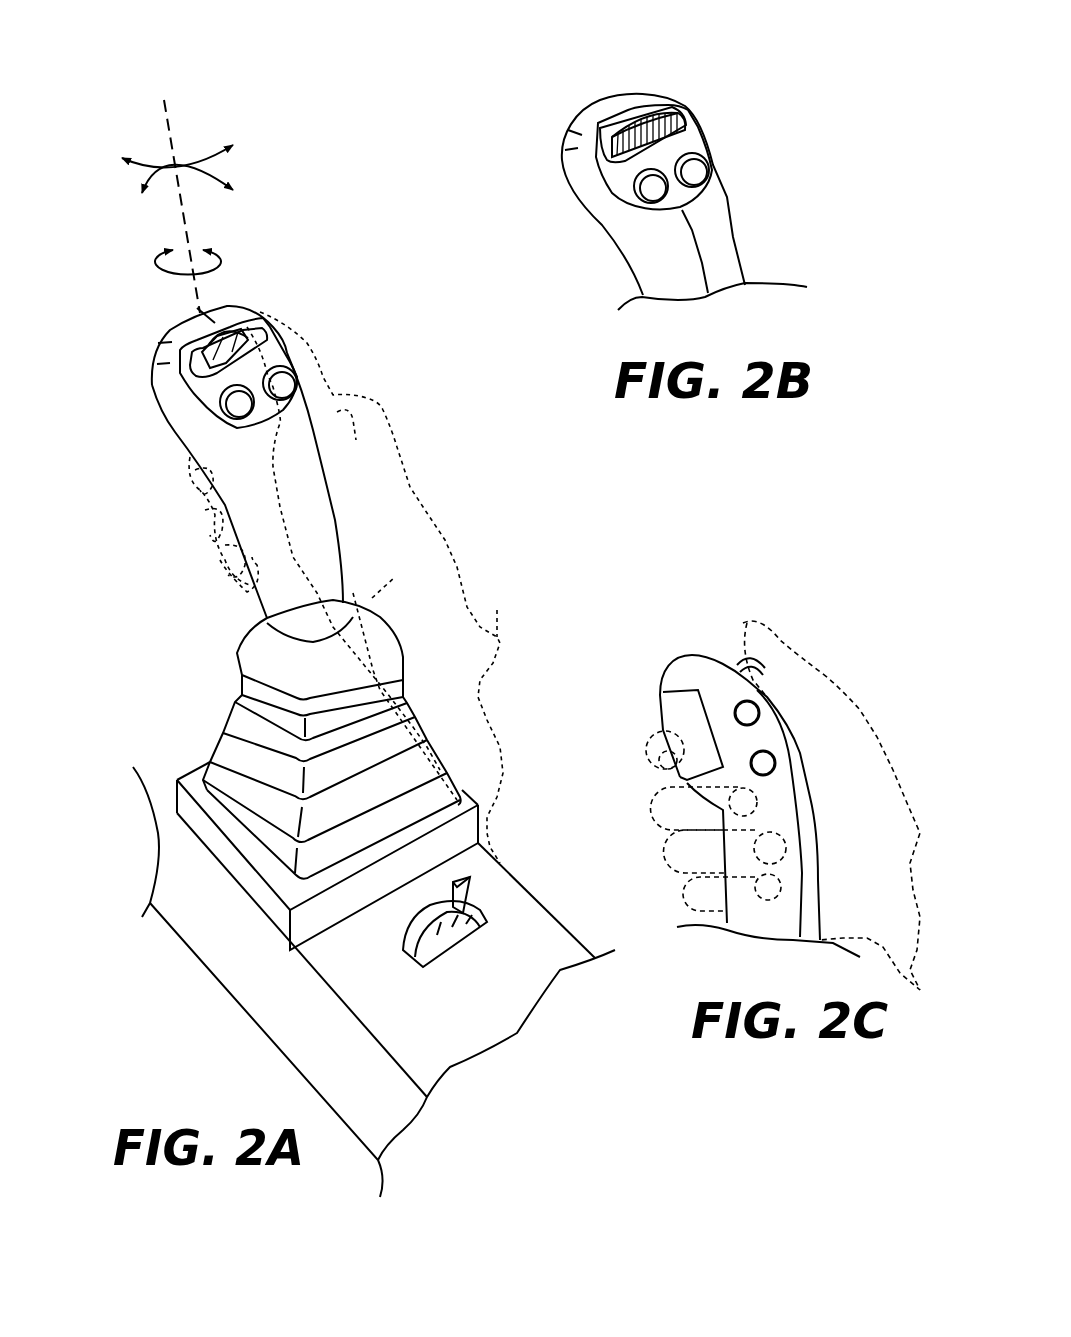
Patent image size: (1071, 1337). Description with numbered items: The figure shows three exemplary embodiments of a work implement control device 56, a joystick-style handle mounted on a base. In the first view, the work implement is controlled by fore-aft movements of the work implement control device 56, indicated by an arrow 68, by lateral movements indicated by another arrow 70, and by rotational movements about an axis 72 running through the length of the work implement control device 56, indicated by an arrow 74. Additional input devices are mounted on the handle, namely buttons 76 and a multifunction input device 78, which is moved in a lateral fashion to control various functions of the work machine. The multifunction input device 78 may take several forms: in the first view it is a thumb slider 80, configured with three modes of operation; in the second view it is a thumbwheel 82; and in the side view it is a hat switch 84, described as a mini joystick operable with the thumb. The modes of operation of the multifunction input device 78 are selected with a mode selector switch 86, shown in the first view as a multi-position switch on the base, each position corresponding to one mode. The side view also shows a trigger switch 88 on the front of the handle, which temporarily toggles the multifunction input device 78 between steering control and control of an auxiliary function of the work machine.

In FIG. 2A, the work implement control device 56 is at (177, 602).
In FIG. 2B, the work implement control device 56 is at (750, 70).
In FIG. 2C, the work implement control device 56 is at (695, 590).
In FIG. 2A, the arrow 68 is at (150, 160).
In FIG. 2A, the arrow 70 is at (200, 150).
In FIG. 2A, the axis 72 is at (168, 125).
In FIG. 2A, the arrow 74 is at (210, 248).
In FIG. 2A, the buttons 76 is at (280, 385).
In FIG. 2B, the buttons 76 is at (653, 187).
In FIG. 2A, the multifunction input device 78 is at (192, 372).
In FIG. 2B, the multifunction input device 78 is at (603, 153).
In FIG. 2C, the multifunction input device 78 is at (737, 657).
In FIG. 2A, the thumb slider 80 is at (231, 338).
In FIG. 2B, the thumbwheel 82 is at (652, 120).
In FIG. 2C, the hat switch 84 is at (767, 672).
In FIG. 2A, the mode selector switch 86 is at (407, 967).
In FIG. 2C, the trigger switch 88 is at (683, 703).